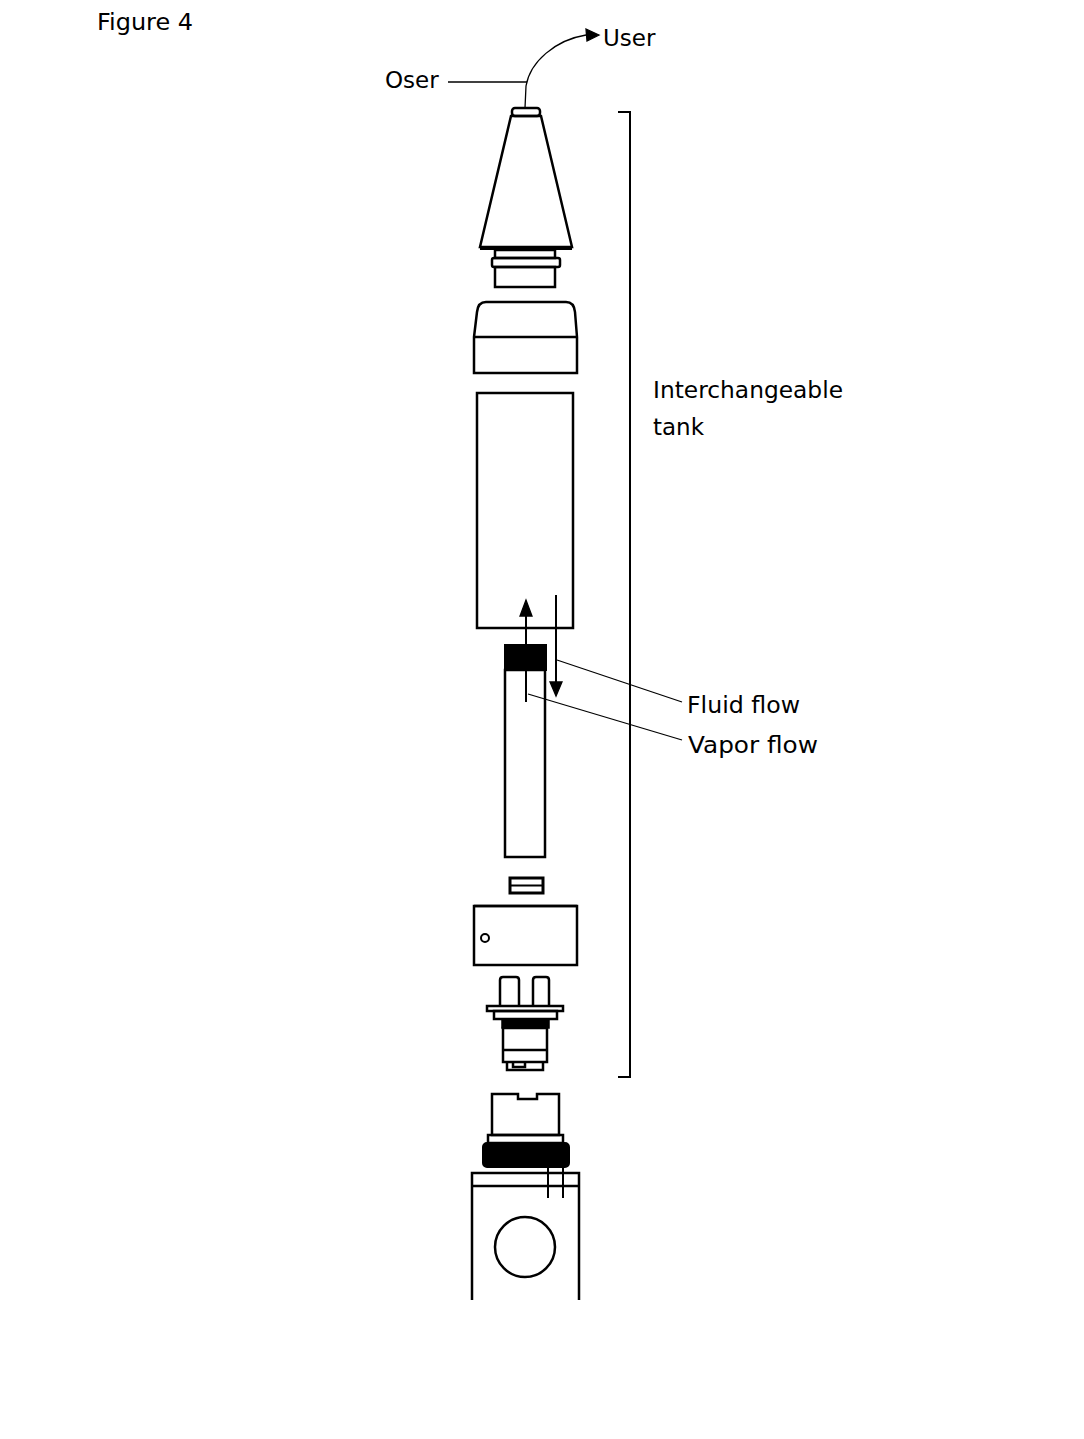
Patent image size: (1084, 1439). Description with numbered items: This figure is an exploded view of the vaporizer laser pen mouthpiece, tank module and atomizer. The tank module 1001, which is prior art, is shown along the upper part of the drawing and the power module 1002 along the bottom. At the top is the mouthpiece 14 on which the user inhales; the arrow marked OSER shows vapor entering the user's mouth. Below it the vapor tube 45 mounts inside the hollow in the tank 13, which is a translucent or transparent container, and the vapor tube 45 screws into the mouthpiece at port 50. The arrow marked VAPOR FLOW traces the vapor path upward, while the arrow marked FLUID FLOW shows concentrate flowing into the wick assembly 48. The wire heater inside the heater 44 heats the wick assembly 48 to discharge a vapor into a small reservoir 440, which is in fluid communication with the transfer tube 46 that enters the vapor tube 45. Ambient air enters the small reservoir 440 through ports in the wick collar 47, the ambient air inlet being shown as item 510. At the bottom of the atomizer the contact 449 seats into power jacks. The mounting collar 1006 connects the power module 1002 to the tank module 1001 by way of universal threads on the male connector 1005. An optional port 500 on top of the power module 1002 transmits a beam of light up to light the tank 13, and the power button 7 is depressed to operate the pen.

The mouthpiece 14 is at (500, 158).
The port 50 is at (515, 377).
The tank 13 is at (475, 580).
The vapor tube 45 is at (507, 697).
The transfer tube 46 is at (545, 882).
The wick assembly 48 is at (528, 903).
The wick collar 47 is at (577, 928).
The ambient air inlet 510 is at (466, 937).
The small reservoir 440 is at (549, 987).
The heater 44 is at (503, 1043).
The contact 449 is at (543, 1065).
The male connector 1005 is at (559, 1100).
The mounting collar 1006 is at (483, 1152).
The port 500 is at (562, 1178).
The power button 7 is at (558, 1245).
The tank module 1001 is at (630, 595).
The power module 1002 is at (776, 1172).